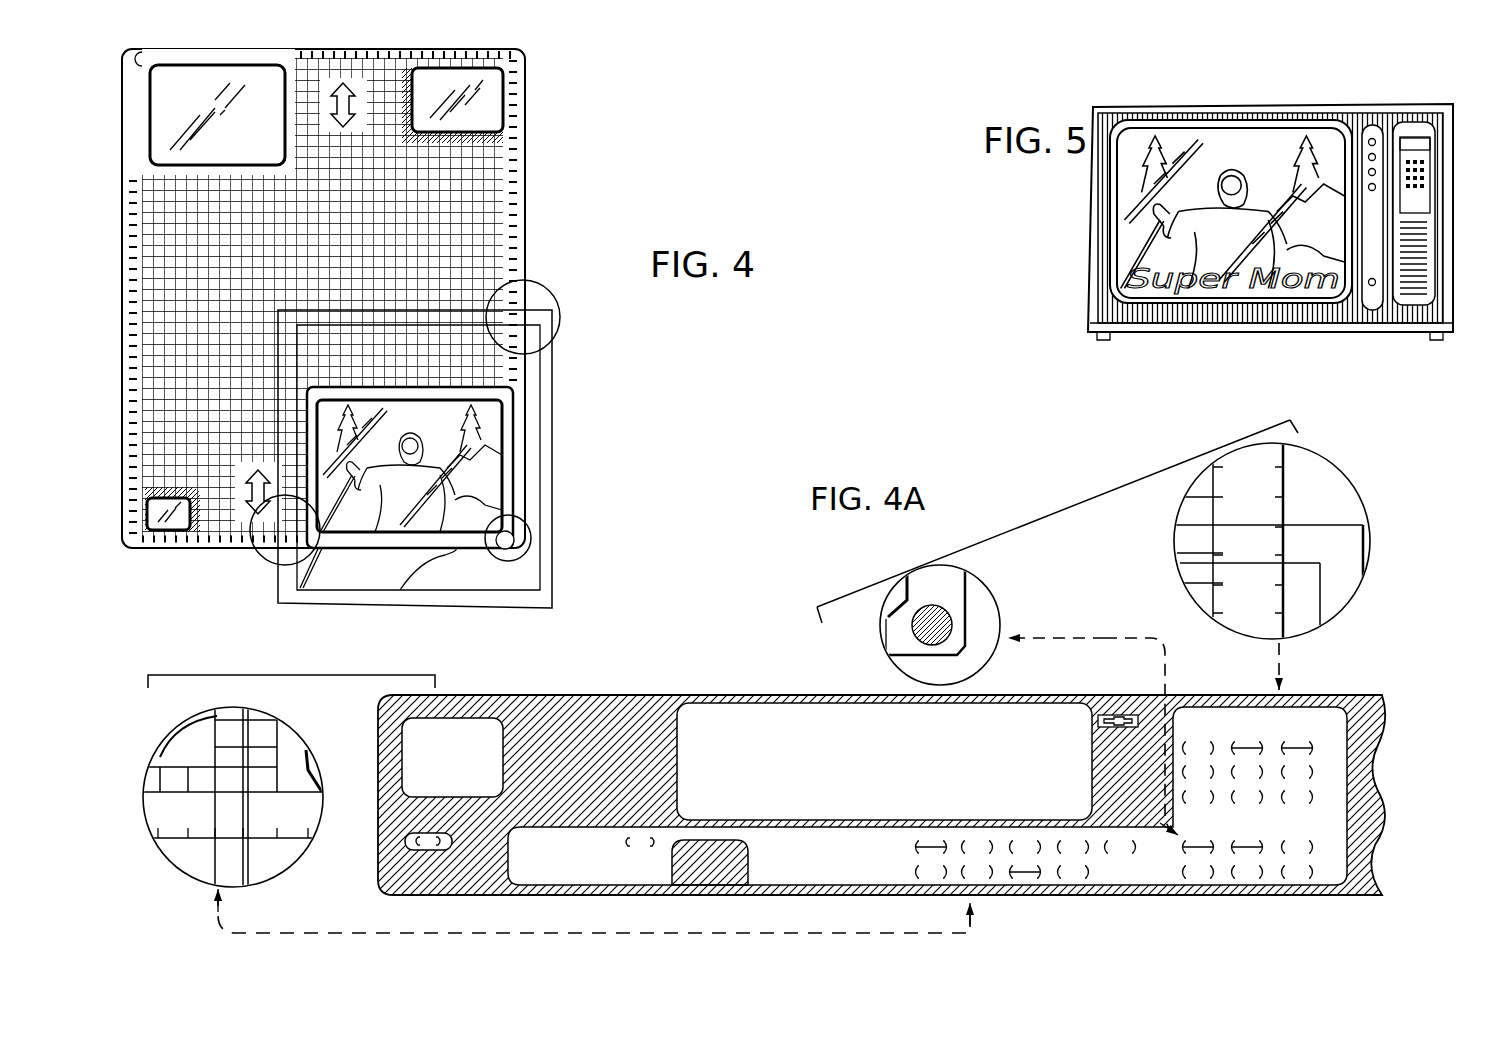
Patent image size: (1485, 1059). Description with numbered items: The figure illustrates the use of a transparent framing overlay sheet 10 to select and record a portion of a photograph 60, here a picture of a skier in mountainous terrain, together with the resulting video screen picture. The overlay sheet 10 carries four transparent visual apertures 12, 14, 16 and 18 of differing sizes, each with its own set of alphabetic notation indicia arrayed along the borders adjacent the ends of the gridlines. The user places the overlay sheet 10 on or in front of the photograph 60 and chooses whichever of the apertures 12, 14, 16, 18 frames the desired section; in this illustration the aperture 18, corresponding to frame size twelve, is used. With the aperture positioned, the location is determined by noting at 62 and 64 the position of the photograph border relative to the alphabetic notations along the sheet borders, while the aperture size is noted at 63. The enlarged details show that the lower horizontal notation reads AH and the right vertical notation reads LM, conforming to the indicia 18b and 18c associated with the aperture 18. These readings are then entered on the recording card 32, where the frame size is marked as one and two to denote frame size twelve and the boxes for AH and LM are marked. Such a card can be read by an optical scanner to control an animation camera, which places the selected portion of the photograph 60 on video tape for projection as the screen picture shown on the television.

In FIG. 4, the framing overlay sheet 10 is at (557, 143).
In FIG. 4, the visual aperture 12 is at (157, 512).
In FIG. 4, the visual aperture 14 is at (497, 102).
In FIG. 4, the visual aperture 16 is at (158, 100).
In FIG. 4, the visual aperture 18 is at (492, 464).
In FIG. 4, the notation indicia 18b is at (182, 548).
In FIG. 4A, the notation indicia 18b is at (173, 822).
In FIG. 4, the notation indicia 18c is at (530, 200).
In FIG. 4A, the notation indicia 18c is at (1272, 483).
In FIG. 4A, the recording card 32 is at (673, 693).
In FIG. 4, the photograph 60 is at (553, 563).
In FIG. 4, the border position notation 62 is at (541, 291).
In FIG. 4A, the border position notation 62 is at (1318, 515).
In FIG. 4, the aperture size notation 63 is at (531, 529).
In FIG. 4A, the aperture size notation 63 is at (980, 632).
In FIG. 4, the border position notation 64 is at (262, 555).
In FIG. 4A, the border position notation 64 is at (210, 851).